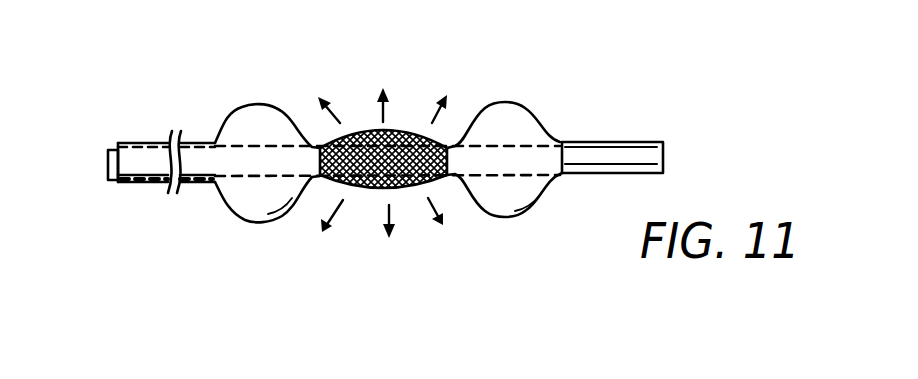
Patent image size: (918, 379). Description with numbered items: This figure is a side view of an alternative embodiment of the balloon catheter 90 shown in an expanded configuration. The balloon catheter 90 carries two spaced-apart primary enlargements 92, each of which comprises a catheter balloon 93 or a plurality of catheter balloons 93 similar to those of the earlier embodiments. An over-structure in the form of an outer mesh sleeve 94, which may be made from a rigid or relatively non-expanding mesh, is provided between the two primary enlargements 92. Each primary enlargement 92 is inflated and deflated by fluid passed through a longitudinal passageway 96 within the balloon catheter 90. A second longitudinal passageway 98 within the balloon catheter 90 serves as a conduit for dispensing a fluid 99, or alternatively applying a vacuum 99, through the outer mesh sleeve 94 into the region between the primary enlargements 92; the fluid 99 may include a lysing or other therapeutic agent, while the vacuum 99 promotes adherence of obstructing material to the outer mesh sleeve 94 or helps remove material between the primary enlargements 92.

The balloon catheter 90 is at (206, 93).
The primary enlargement 92 is at (243, 221).
The catheter balloon 93 is at (285, 112).
The outer mesh sleeve 94 is at (367, 188).
The longitudinal passageway 96 is at (112, 170).
The second longitudinal passageway 98 is at (111, 147).
The fluid or vacuum 99 is at (435, 108).